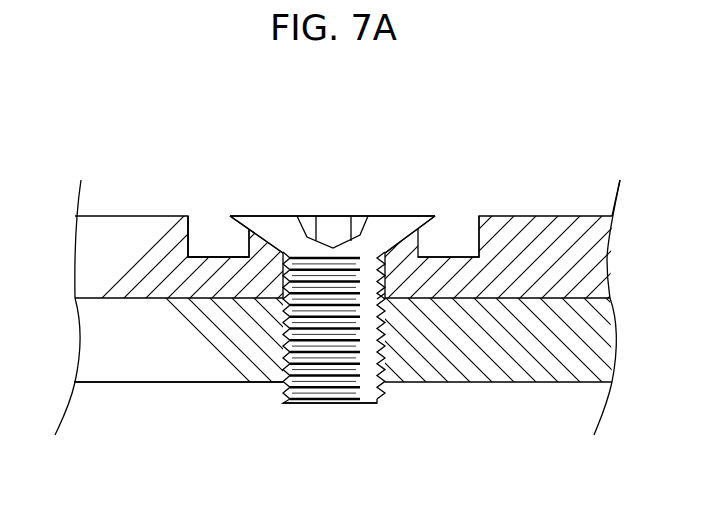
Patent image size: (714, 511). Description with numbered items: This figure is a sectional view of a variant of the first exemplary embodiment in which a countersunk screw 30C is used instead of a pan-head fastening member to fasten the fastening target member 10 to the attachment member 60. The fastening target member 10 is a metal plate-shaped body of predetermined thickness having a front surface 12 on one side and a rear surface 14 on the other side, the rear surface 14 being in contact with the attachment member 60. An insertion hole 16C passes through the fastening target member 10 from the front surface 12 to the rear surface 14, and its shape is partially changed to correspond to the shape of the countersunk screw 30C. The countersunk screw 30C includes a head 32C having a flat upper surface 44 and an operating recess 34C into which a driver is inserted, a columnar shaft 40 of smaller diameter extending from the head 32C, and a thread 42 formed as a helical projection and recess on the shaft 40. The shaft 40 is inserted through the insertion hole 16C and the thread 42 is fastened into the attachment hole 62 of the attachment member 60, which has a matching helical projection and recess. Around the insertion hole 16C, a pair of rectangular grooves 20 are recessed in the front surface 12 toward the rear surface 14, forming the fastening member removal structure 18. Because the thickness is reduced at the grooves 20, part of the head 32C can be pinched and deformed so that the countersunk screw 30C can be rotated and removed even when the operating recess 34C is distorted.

The fastening target member 10 is at (557, 213).
The front surface 12 is at (112, 216).
The rear surface 14 is at (97, 297).
The insertion hole 16C is at (386, 251).
The fastening member removal structure 18 is at (208, 207).
The grooves 20 is at (202, 231).
The countersunk screw 30C is at (364, 404).
The head 32C is at (387, 216).
The operating recess 34C is at (337, 216).
The shaft 40 is at (318, 403).
The thread 42 is at (283, 395).
The flat upper surface 44 is at (270, 215).
The attachment member 60 is at (182, 384).
The attachment hole 62 is at (387, 301).